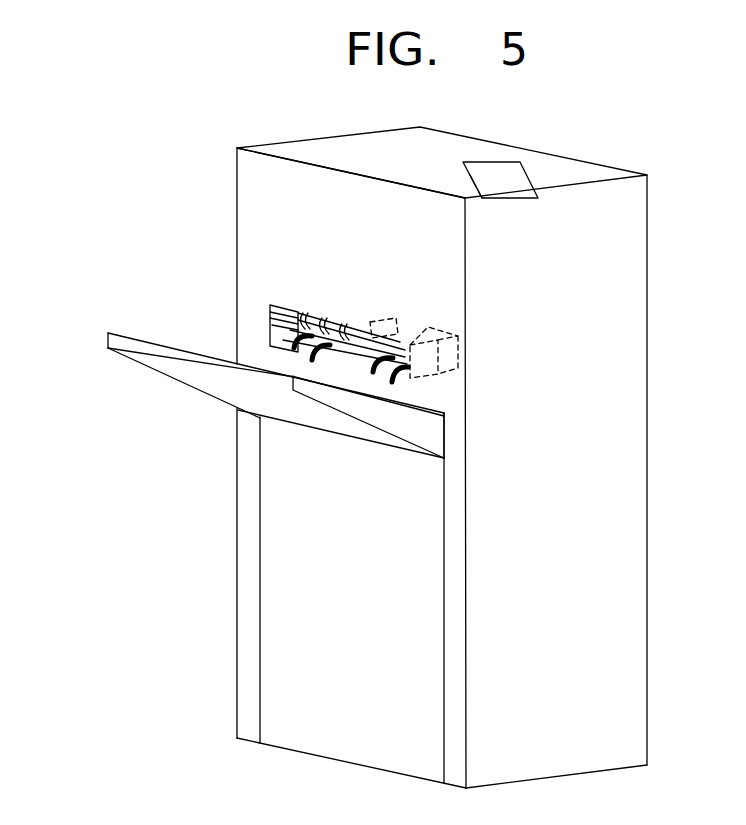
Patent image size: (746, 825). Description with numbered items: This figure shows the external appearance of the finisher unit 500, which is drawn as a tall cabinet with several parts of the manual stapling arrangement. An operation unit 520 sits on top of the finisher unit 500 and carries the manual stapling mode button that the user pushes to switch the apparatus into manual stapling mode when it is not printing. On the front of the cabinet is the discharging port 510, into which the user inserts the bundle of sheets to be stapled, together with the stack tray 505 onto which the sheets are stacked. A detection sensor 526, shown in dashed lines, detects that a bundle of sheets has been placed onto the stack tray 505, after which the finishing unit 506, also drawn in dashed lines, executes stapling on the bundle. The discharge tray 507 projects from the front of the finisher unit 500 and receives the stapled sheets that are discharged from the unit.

The finisher unit 500 is at (630, 226).
The stack tray 505 is at (270, 327).
The finishing unit 506 is at (458, 353).
The discharge tray 507 is at (202, 379).
The discharging port 510 is at (338, 315).
The operation unit 520 is at (528, 172).
The detection sensor 526 is at (396, 322).